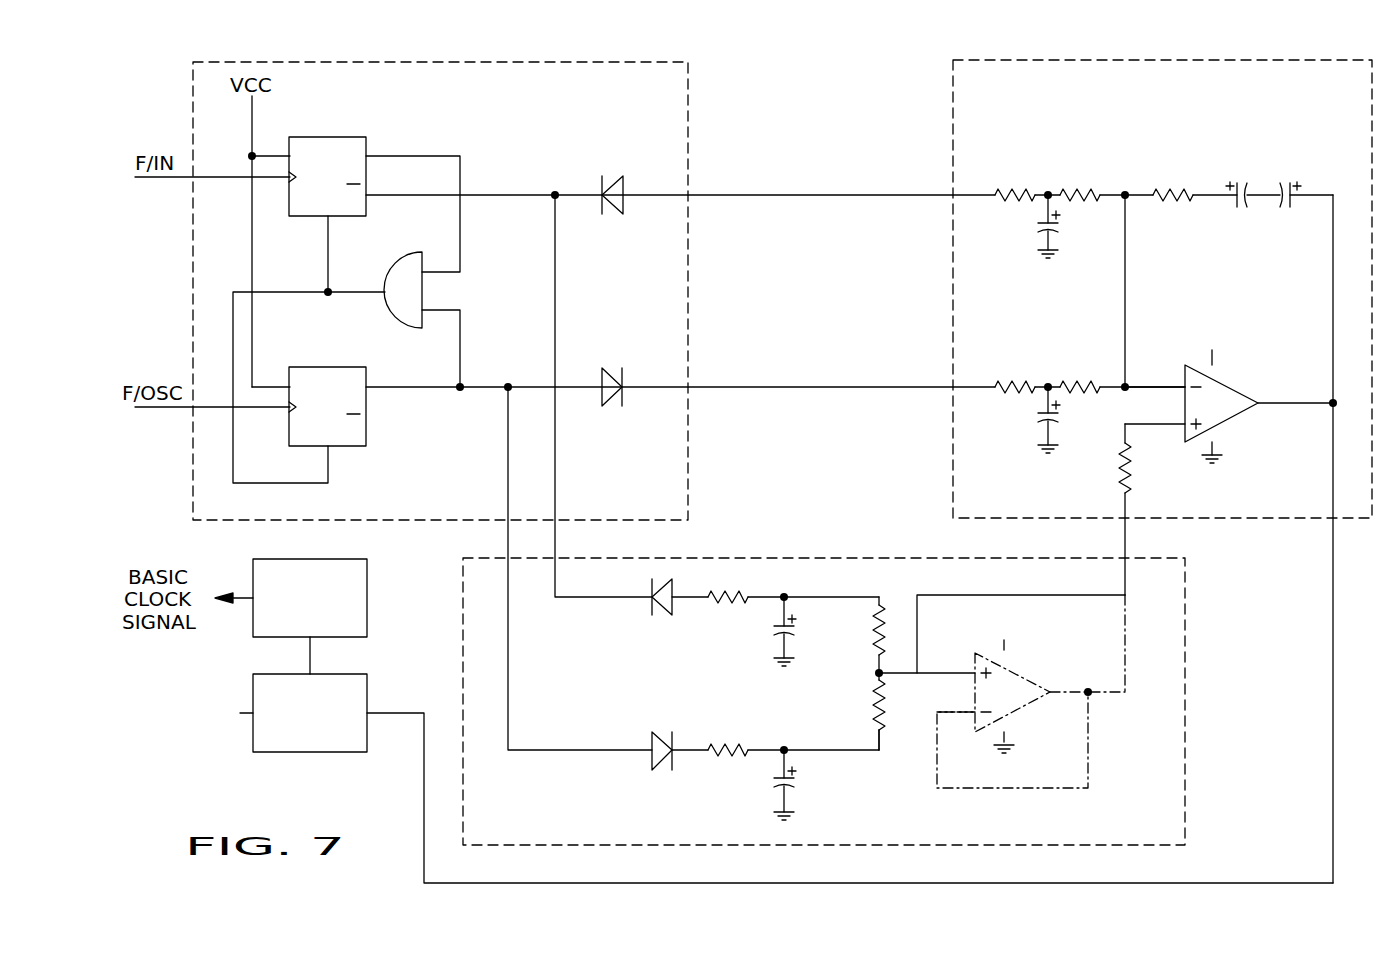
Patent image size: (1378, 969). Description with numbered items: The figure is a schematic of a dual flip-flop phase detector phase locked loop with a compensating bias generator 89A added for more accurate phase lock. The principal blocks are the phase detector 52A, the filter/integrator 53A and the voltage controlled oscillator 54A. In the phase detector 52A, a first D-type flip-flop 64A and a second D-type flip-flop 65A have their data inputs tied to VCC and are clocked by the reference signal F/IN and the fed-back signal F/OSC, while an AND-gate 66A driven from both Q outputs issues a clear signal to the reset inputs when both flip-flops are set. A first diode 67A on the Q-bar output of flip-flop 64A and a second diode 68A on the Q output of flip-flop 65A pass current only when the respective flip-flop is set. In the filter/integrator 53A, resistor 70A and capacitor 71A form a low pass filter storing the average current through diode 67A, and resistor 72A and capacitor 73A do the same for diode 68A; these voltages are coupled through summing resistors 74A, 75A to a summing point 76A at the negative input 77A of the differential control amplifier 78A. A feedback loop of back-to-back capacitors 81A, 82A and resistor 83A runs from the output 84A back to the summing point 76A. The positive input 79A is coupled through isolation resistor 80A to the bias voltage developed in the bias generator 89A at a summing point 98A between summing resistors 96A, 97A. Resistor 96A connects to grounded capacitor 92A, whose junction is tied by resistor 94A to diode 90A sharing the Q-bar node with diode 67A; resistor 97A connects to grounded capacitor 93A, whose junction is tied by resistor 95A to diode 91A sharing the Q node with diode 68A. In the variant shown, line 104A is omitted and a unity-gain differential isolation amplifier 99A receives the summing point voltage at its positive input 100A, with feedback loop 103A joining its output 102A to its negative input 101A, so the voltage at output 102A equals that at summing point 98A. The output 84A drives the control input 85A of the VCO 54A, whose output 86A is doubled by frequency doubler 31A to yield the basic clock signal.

The phase detector 52A is at (540, 128).
The filter/integrator 53A is at (1338, 132).
The bias generator 89A is at (557, 815).
The first D-type flip-flop 64A is at (330, 137).
The second D-type flip-flop 65A is at (337, 367).
The AND-gate 66A is at (400, 262).
The first diode 67A is at (608, 179).
The second diode 68A is at (608, 370).
The resistor 70A is at (1024, 180).
The capacitor 71A is at (1042, 222).
The resistor 72A is at (1021, 375).
The capacitor 73A is at (1040, 409).
The summing resistor 74A is at (1091, 180).
The summing resistor 75A is at (1093, 375).
The summing point 76A is at (1122, 394).
The negative input 77A is at (1168, 382).
The differential control amplifier 78A is at (1220, 378).
The positive input 79A is at (1166, 425).
The isolation resistor 80A is at (1122, 467).
The capacitor 81A is at (1296, 206).
The capacitor 82A is at (1238, 208).
The resistor 83A is at (1165, 187).
The output 84A is at (1260, 405).
The diode 90A is at (658, 616).
The diode 91A is at (666, 722).
The capacitor 92A is at (778, 622).
The capacitor 93A is at (778, 780).
The resistor 94A is at (744, 584).
The resistor 95A is at (744, 736).
The summing resistor 96A is at (873, 638).
The summing resistor 97A is at (890, 722).
The summing point 98A is at (877, 672).
The differential isolation amplifier 99A is at (1010, 664).
The positive input 100A is at (955, 676).
The negative input 101A is at (958, 722).
The output 102A is at (1052, 694).
The feedback loop 103A is at (1090, 745).
The line 104A is at (1004, 595).
The frequency doubler 31A is at (367, 598).
The voltage controlled oscillator 54A is at (244, 712).
The control input 85A is at (384, 705).
The output 86A is at (310, 660).